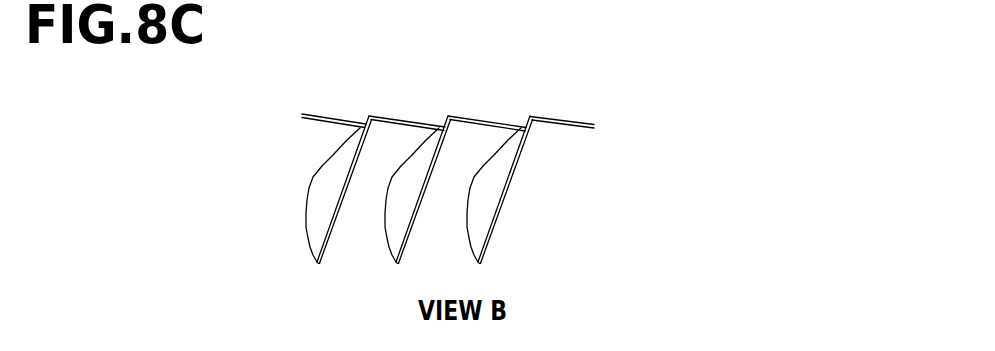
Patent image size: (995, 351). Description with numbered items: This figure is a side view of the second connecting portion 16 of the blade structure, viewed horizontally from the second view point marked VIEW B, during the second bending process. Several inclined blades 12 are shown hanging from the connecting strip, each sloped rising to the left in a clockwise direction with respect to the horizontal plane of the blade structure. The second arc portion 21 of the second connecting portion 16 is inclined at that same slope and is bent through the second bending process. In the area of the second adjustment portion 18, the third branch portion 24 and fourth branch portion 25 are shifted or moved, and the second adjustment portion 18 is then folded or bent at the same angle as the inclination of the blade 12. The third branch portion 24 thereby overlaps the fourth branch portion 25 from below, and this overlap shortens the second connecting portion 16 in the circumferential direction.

The blade 12 is at (483, 228).
The second connecting portion 16 is at (483, 121).
The second adjustment portion 18 is at (444, 120).
The second arc portion 21 is at (393, 117).
The third branch portion 24 is at (530, 132).
The fourth branch portion 25 is at (531, 116).